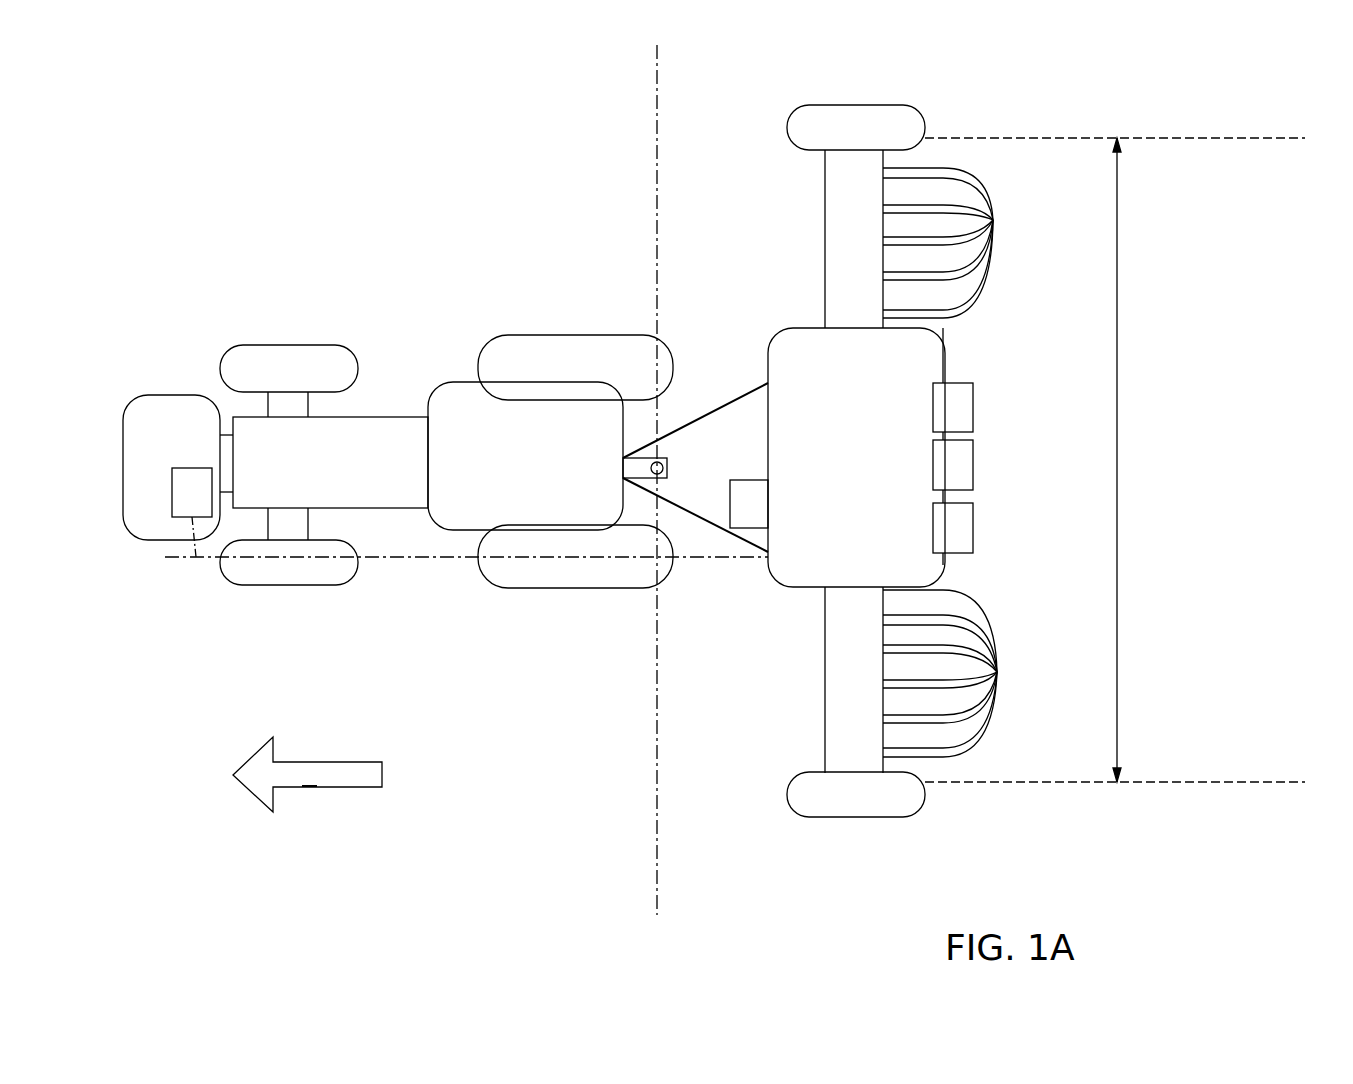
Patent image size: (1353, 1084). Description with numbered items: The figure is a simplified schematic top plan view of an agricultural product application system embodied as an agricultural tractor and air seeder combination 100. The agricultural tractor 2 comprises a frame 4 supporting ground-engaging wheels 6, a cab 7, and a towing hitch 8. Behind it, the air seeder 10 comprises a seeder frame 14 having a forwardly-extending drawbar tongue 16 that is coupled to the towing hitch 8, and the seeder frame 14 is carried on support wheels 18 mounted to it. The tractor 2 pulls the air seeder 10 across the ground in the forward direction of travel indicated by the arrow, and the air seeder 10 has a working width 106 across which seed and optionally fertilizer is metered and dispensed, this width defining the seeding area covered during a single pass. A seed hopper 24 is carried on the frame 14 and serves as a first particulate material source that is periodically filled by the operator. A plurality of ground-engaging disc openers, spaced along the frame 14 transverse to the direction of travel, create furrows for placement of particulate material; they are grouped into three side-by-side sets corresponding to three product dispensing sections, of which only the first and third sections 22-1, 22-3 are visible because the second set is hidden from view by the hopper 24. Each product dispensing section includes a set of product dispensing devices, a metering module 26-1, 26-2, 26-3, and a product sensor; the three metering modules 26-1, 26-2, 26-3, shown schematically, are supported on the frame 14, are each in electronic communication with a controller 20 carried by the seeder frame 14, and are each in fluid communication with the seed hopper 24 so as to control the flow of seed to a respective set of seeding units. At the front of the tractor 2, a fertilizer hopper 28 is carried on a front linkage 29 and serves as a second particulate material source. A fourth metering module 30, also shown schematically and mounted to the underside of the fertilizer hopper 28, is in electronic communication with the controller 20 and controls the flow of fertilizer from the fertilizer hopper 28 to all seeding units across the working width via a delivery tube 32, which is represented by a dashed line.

The agricultural tractor and air seeder combination 100 is at (370, 148).
The agricultural tractor 2 is at (452, 320).
The frame 4 is at (400, 416).
The ground-engaging wheels 6 is at (290, 345).
The cab 7 is at (462, 382).
The towing hitch 8 is at (666, 462).
The air seeder 10 is at (752, 838).
The seeder frame 14 is at (824, 667).
The drawbar tongue 16 is at (712, 528).
The support wheels 18 is at (862, 104).
The controller 20 is at (745, 480).
The first section of disc openers 22-1 is at (970, 673).
The third section of disc openers 22-3 is at (969, 243).
The seed hopper 24 is at (790, 328).
The metering module 26-1 is at (976, 530).
The metering module 26-2 is at (976, 470).
The metering module 26-3 is at (976, 410).
The fertilizer hopper 28 is at (147, 394).
The front linkage 29 is at (228, 432).
The fourth metering module 30 is at (176, 518).
The delivery tube 32 is at (425, 560).
The working width 106 is at (1120, 250).